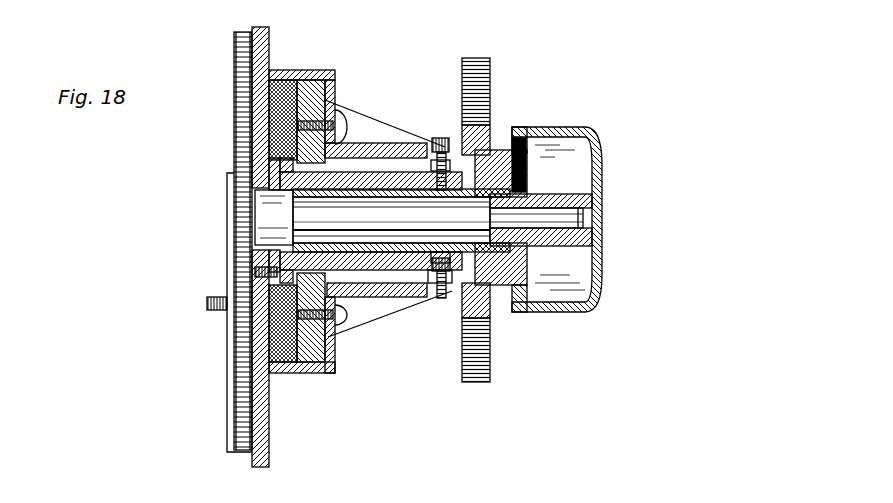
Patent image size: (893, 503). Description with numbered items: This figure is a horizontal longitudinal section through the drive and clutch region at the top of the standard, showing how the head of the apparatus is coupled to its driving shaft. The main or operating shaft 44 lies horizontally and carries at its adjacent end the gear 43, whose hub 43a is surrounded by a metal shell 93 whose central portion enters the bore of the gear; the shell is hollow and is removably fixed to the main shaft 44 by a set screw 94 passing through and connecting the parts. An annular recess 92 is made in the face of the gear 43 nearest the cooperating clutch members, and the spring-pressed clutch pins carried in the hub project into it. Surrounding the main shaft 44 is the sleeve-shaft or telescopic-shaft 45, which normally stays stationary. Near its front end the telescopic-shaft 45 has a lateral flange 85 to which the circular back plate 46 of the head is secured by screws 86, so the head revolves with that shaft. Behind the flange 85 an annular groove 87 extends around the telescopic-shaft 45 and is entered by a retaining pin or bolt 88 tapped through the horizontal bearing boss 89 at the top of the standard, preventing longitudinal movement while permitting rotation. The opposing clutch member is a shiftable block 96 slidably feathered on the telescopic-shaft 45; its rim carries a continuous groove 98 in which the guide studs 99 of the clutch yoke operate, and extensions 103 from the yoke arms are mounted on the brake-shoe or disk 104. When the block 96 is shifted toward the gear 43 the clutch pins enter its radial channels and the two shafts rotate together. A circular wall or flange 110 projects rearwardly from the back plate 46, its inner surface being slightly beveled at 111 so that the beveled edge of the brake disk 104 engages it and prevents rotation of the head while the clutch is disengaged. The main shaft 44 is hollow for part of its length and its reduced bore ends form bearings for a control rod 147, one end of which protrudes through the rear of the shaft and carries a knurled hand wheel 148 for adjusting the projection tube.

The lateral flange 85 is at (267, 163).
The back plate 46 is at (268, 38).
The brake-shoe or disk 104 is at (323, 90).
The circular wall or flange 110 is at (282, 70).
The beveled inner surface 111 is at (330, 56).
The extensions 103 is at (346, 112).
The sleeve-shaft or telescopic-shaft 45 is at (391, 188).
The annular groove 87 is at (361, 172).
The retaining pin or bolt 88 is at (358, 272).
The horizontal bearing boss 89 is at (378, 255).
The main or operating shaft 44 is at (262, 210).
The control rod 147 is at (566, 220).
The screws 86 is at (255, 270).
The guide studs 99 is at (443, 138).
The continuous groove 98 is at (451, 152).
The shiftable block 96 is at (450, 283).
The gear 43 is at (490, 74).
The hub 43a is at (494, 148).
The annular recess 92 is at (472, 285).
The set screw 94 is at (517, 150).
The metal shell 93 is at (535, 165).
The knurled hand wheel 148 is at (595, 274).